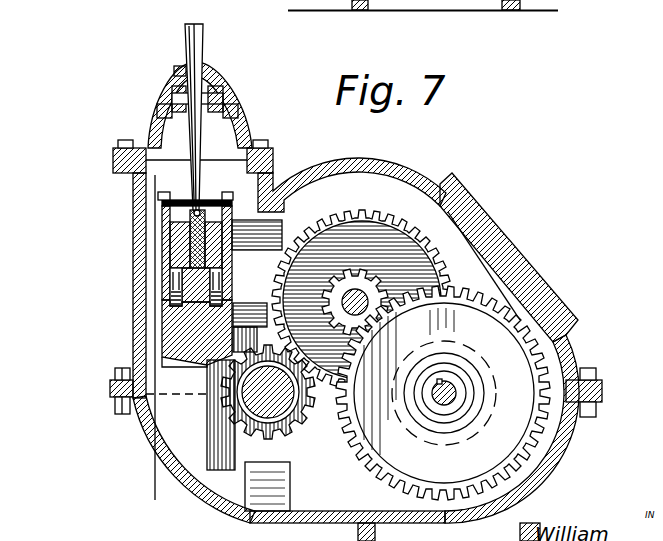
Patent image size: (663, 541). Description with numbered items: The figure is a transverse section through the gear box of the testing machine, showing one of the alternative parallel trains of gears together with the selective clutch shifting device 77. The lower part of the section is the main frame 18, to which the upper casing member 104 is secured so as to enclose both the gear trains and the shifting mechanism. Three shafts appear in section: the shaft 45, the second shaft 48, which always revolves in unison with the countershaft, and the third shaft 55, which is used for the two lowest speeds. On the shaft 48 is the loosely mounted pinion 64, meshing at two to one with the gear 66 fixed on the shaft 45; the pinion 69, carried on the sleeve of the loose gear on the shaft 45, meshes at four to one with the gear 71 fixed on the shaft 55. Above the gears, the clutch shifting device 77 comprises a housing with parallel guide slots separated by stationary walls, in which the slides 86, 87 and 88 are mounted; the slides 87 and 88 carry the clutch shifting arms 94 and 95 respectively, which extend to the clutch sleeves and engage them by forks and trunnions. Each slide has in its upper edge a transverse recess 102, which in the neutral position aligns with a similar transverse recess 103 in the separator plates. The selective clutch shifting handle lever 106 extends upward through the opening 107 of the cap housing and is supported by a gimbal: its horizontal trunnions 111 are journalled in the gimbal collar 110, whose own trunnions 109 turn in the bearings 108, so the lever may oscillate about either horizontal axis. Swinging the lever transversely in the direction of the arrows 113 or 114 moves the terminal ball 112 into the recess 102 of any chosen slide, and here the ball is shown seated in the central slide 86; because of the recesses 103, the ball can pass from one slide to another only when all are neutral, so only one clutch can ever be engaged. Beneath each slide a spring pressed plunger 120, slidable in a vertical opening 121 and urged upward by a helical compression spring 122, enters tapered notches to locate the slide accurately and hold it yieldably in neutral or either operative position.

The main frame 18 is at (586, 442).
The shaft 45 is at (357, 295).
The second shaft 48 is at (262, 402).
The third shaft 55 is at (448, 396).
The pinion 64 is at (247, 410).
The gear 66 is at (350, 270).
The pinion 69 is at (441, 325).
The gear 71 is at (512, 320).
The selective clutch shifting device 77 is at (172, 260).
The slide 86 is at (168, 232).
The slide 87 is at (170, 247).
The slide 88 is at (284, 262).
The clutch shifting arm 94 is at (283, 292).
The clutch shifting arm 95 is at (262, 240).
The transverse recess 102 is at (275, 176).
The transverse recess 103 is at (203, 205).
The upper casing member 104 is at (372, 168).
The selective clutch shifting handle lever 106 is at (186, 34).
The opening 107 is at (180, 68).
The bearings 108 is at (156, 110).
The horizontal trunnions 109 is at (160, 100).
The gimbal collar 110 is at (177, 78).
The horizontal trunnions 111 is at (210, 84).
The terminal ball 112 is at (192, 206).
The arrow 113 is at (132, 6).
The arrow 114 is at (245, 6).
The spring pressed plunger 120 is at (170, 293).
The vertical openings 121 is at (170, 277).
The helical compression springs 122 is at (212, 325).